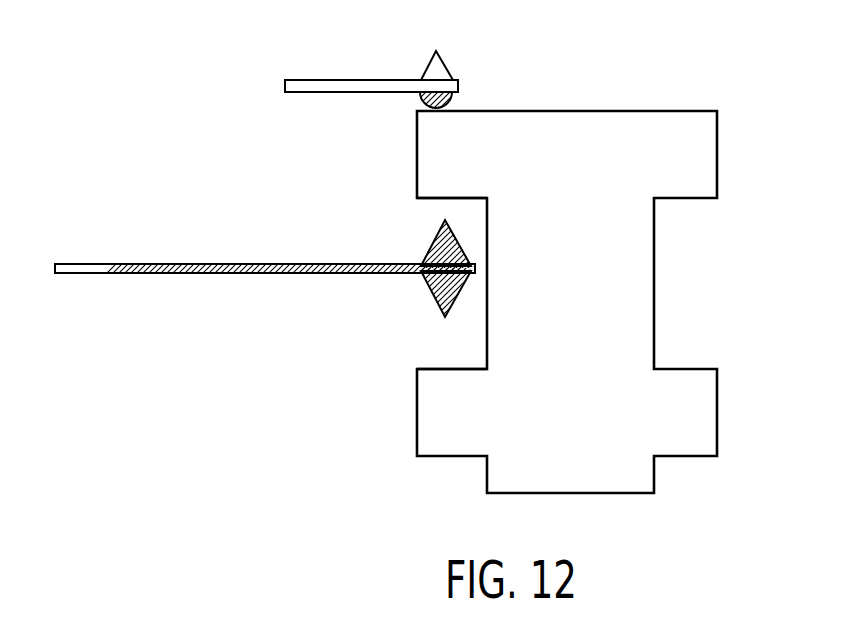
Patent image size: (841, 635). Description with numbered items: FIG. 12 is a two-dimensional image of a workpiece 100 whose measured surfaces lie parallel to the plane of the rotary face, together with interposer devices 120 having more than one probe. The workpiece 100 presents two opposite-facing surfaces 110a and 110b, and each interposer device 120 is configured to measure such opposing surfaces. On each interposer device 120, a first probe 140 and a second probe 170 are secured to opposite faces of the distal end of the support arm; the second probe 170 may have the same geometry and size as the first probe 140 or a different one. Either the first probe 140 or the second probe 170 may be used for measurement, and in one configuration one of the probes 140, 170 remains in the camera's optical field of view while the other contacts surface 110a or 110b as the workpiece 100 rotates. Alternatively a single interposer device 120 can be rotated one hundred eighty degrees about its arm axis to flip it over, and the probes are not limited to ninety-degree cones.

The workpiece 100 is at (718, 158).
The surface 110a is at (420, 199).
The surface 110b is at (418, 369).
The interposer device 120 is at (285, 86).
The first probe 140 is at (455, 100).
The second probe 170 is at (442, 60).